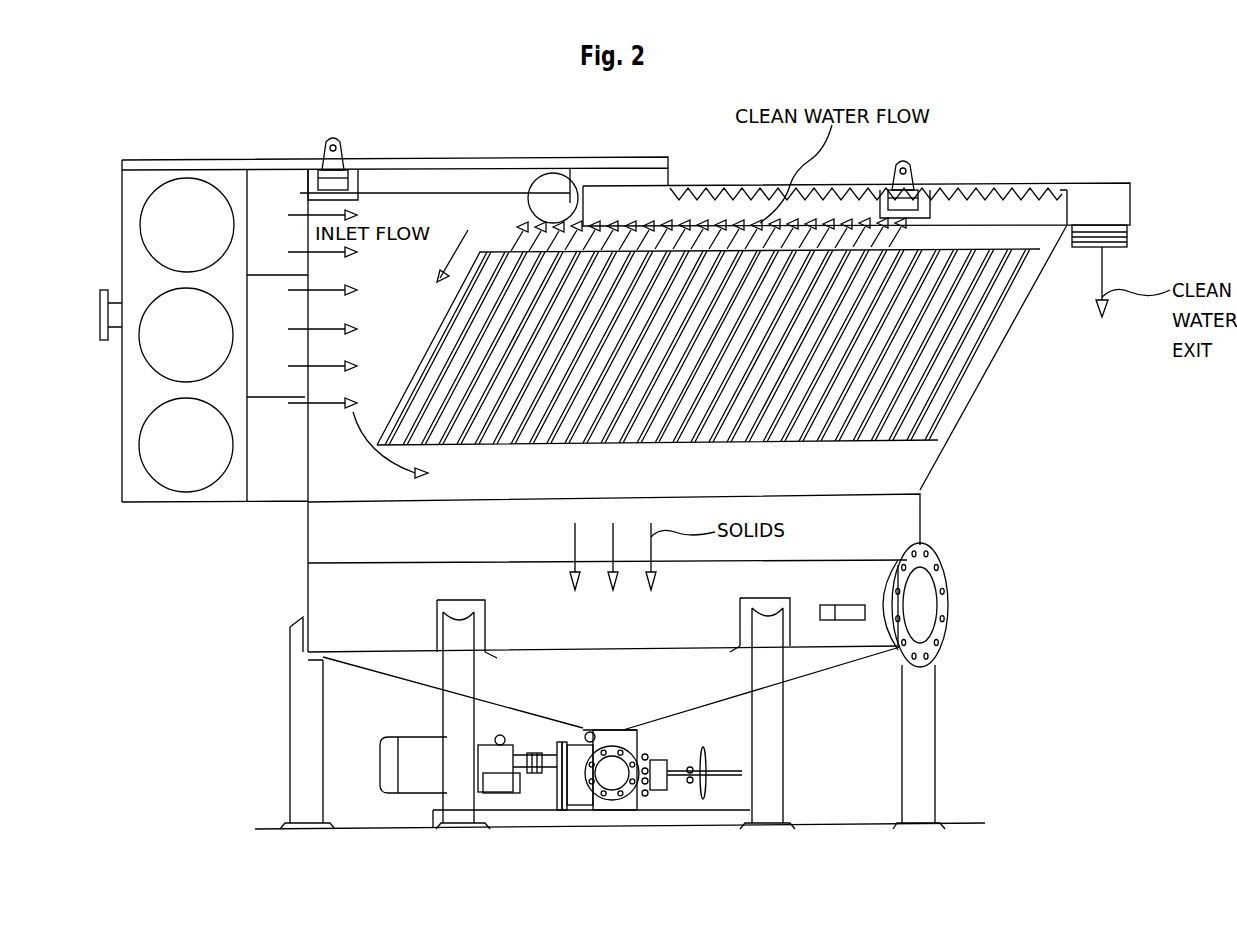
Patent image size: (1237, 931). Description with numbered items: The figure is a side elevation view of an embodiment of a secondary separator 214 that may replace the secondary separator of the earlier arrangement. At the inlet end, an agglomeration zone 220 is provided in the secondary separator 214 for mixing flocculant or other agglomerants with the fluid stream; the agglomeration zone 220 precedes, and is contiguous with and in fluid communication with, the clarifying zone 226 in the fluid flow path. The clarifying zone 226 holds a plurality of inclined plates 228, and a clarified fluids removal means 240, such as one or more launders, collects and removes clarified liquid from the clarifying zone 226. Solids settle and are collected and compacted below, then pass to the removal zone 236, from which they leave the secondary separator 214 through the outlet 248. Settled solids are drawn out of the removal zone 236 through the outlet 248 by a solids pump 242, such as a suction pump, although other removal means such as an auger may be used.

The secondary separator 214 is at (378, 142).
The agglomeration zone 220 is at (208, 183).
The clarifying zone 226 is at (470, 213).
The inclined plates 228 is at (975, 372).
The removal zone 236 is at (700, 695).
The clarified fluids removal means 240 is at (1053, 195).
The solids pump 242 is at (600, 810).
The outlet 248 is at (625, 735).